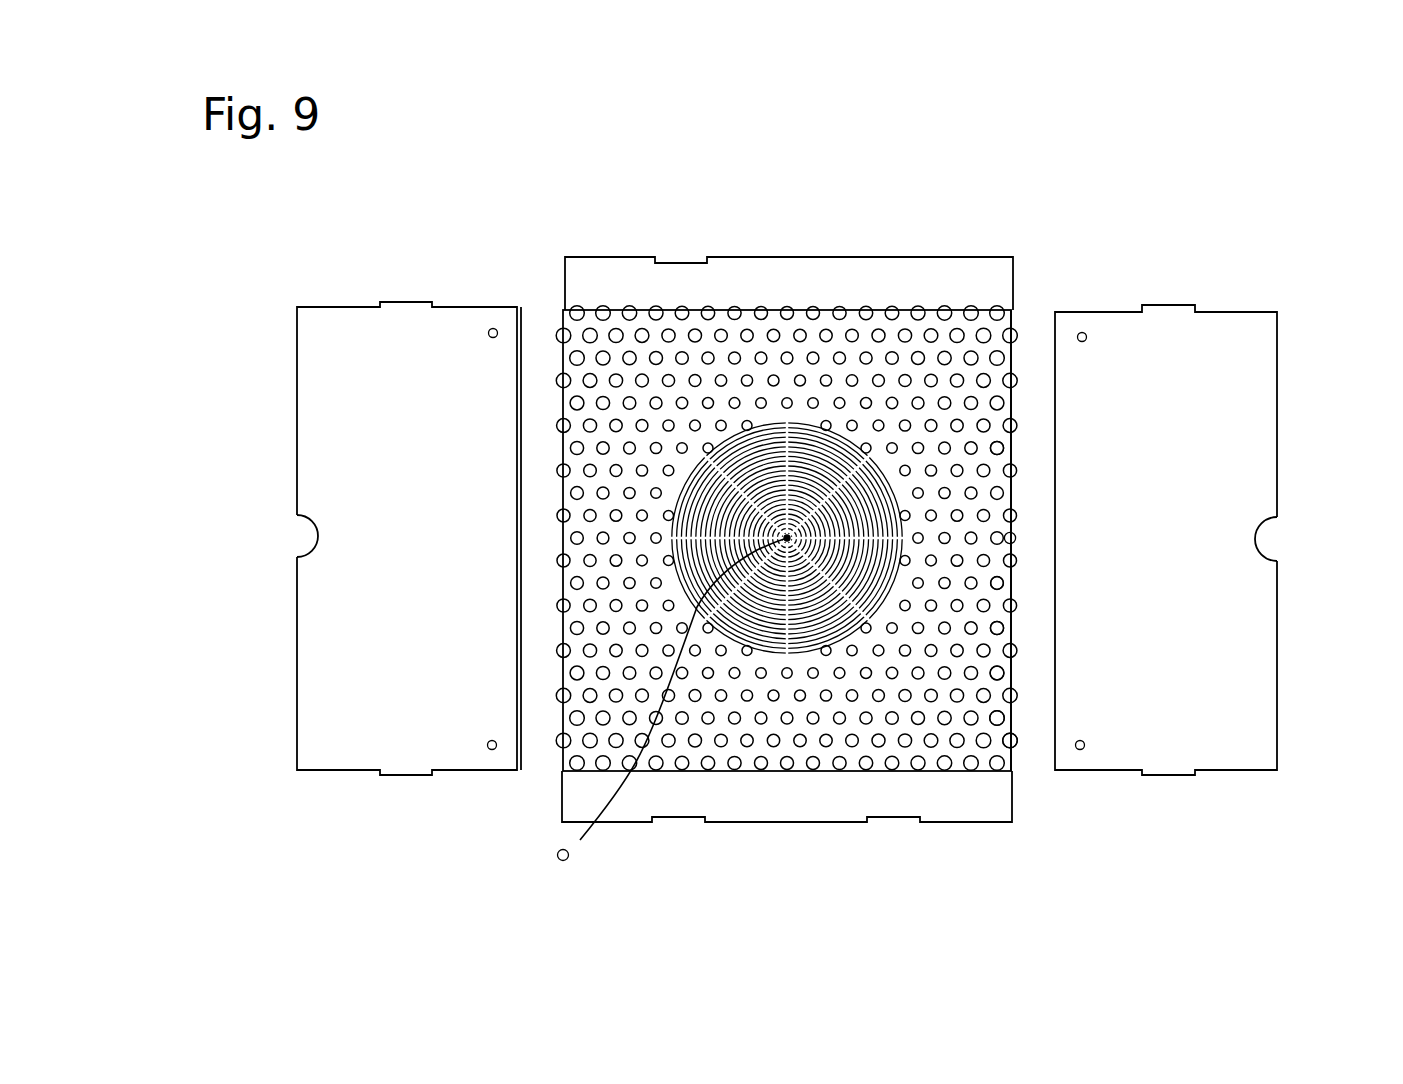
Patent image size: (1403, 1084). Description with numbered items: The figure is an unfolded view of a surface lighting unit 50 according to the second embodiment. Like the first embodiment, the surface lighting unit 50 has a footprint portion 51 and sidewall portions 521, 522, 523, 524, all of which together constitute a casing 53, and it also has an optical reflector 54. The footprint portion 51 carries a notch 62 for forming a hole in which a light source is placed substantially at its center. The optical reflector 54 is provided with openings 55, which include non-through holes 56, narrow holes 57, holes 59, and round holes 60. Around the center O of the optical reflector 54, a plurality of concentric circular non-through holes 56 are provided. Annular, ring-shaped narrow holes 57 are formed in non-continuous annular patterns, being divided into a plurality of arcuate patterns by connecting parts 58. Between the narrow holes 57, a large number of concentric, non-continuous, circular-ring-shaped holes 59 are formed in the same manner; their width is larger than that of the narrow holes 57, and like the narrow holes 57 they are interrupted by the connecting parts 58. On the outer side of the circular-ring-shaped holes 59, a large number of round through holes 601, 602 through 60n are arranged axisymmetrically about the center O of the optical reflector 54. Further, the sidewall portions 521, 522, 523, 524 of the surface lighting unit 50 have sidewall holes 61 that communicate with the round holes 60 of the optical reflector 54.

The surface lighting unit 50 is at (1308, 216).
The footprint portion 51 is at (400, 317).
The sidewall portion 521 is at (790, 267).
The sidewall portion 522 is at (530, 318).
The sidewall portion 523 is at (790, 800).
The sidewall portion 524 is at (1035, 317).
The casing 53 is at (1200, 212).
The optical reflector 54 is at (973, 747).
The openings 55 is at (1108, 478).
The non-through holes 56 is at (787, 538).
The narrow holes 57 is at (873, 545).
The connecting parts 58 is at (840, 483).
The holes 59 is at (862, 595).
The round holes 60 is at (1057, 622).
The round hole 601 is at (866, 628).
The round hole 602 is at (877, 653).
The round hole 60n is at (990, 715).
The sidewall holes 61 is at (1003, 750).
The notch 62 is at (308, 538).